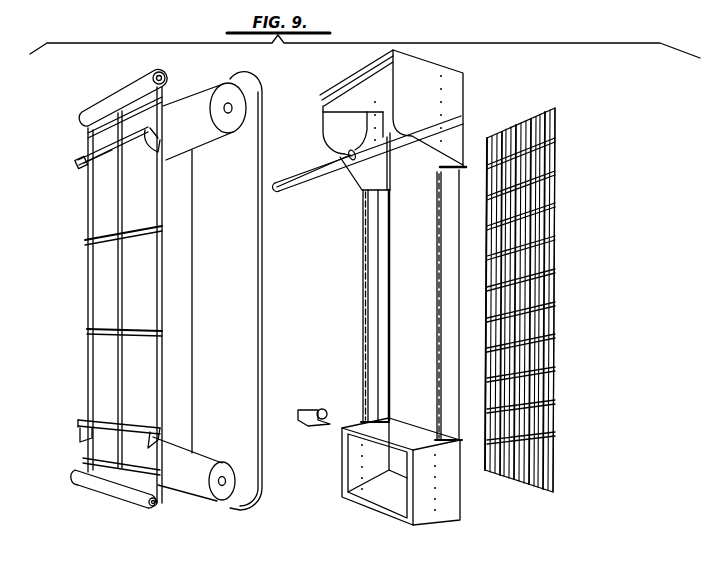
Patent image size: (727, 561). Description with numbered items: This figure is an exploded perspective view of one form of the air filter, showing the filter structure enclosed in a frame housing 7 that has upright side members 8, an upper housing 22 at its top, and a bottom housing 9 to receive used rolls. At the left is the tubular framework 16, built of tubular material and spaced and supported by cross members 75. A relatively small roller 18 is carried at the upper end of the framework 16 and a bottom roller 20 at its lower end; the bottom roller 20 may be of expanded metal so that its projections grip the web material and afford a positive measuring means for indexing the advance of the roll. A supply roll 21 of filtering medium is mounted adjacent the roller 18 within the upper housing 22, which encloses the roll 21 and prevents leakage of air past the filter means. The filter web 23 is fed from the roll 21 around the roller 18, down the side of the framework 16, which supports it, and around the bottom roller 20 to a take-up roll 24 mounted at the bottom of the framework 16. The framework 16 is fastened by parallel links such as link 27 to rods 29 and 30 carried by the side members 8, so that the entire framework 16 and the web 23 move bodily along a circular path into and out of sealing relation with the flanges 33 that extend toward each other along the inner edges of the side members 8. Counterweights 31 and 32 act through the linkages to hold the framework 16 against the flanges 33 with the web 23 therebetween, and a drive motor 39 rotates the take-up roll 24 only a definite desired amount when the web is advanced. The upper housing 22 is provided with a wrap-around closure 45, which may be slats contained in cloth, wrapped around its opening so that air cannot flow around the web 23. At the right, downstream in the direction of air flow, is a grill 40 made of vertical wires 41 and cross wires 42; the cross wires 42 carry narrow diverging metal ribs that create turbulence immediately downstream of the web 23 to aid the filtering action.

The frame housing 7 is at (463, 102).
The upright side members 8 is at (363, 260).
The bottom housing 9 is at (342, 477).
The tubular framework 16 is at (86, 290).
The roller 18 is at (105, 98).
The bottom roller 20 is at (133, 497).
The supply roll 21 is at (188, 120).
The upper housing 22 is at (323, 120).
The filter web 23 is at (260, 260).
The take-up roll 24 is at (195, 477).
The parallel link 27 is at (80, 163).
The rod 29 is at (157, 140).
The rod 30 is at (152, 435).
The counterweight 31 is at (102, 160).
The counterweight 32 is at (87, 440).
The flanges 33 is at (390, 262).
The drive motor 39 is at (310, 427).
The grill 40 is at (529, 305).
The vertical wires 41 is at (488, 210).
The cross wires 42 is at (550, 235).
The wrap-around closure 45 is at (290, 183).
The cross members 75 is at (157, 230).